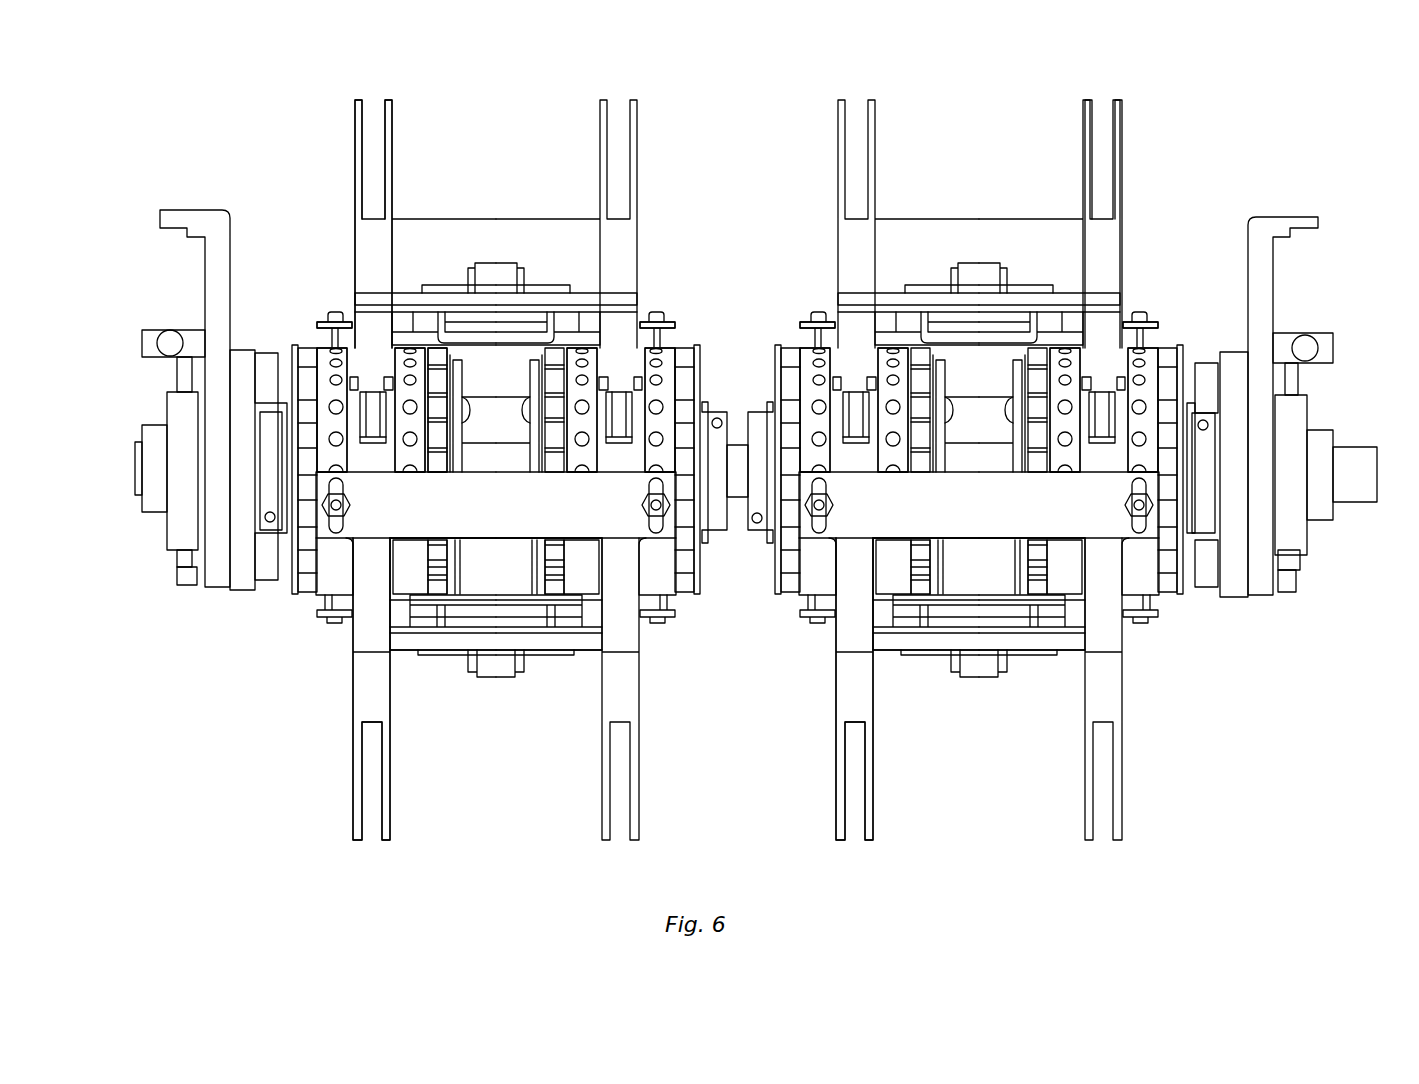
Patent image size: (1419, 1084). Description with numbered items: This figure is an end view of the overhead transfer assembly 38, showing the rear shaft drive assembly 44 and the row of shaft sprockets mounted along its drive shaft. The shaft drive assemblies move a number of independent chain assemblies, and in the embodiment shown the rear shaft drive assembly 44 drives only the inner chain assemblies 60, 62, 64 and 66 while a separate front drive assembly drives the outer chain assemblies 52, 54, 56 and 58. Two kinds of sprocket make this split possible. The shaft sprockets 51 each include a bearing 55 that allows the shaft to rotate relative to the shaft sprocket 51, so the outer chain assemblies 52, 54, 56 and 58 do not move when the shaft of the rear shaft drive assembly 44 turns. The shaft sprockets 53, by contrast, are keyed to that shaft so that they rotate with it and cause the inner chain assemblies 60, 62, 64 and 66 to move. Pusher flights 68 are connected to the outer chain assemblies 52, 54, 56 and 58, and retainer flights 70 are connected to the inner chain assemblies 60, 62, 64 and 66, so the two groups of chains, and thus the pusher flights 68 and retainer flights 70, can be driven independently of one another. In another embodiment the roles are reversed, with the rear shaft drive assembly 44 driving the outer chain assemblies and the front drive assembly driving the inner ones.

The overhead transfer assembly 38 is at (1282, 184).
The rear shaft drive assembly 44 is at (1357, 442).
The shaft sprocket 51 is at (310, 347).
The outer chain assembly 52 is at (1138, 347).
The shaft sprocket 53 is at (442, 388).
The outer chain assembly 54 is at (819, 347).
The bearing 55 is at (270, 535).
The outer chain assembly 56 is at (655, 345).
The outer chain assembly 58 is at (323, 347).
The inner chain assembly 60 is at (1058, 347).
The inner chain assembly 62 is at (882, 347).
The inner chain assembly 64 is at (570, 343).
The inner chain assembly 66 is at (423, 343).
The pusher flight 68 is at (362, 698).
The retainer flight 70 is at (393, 130).